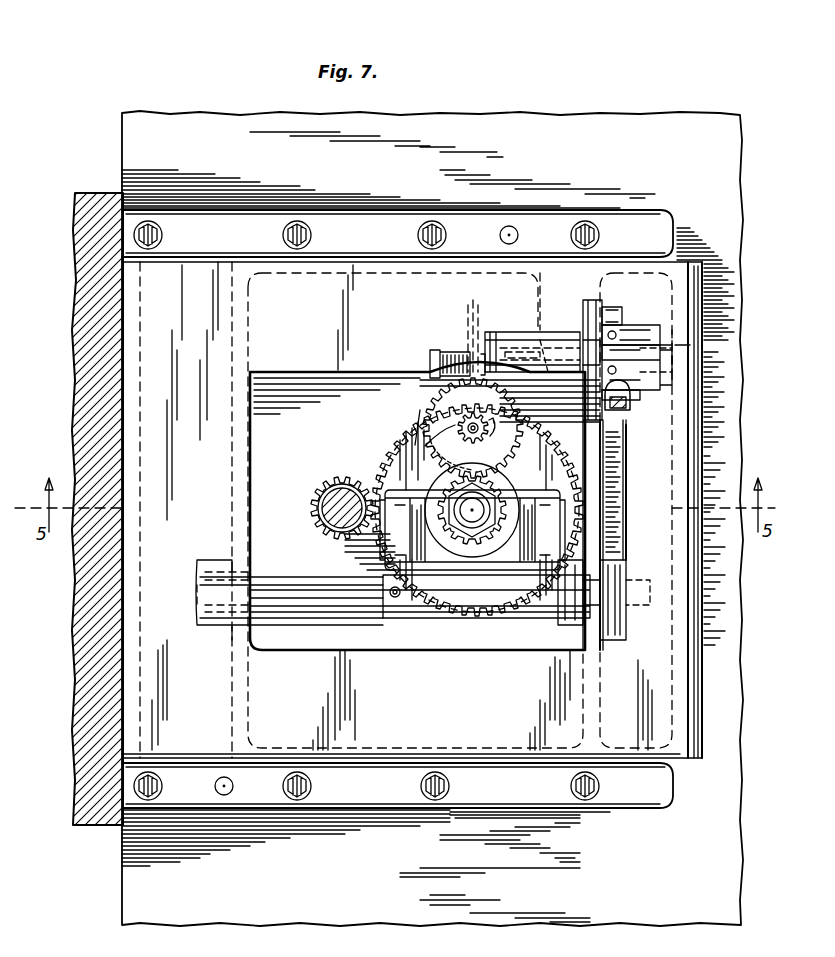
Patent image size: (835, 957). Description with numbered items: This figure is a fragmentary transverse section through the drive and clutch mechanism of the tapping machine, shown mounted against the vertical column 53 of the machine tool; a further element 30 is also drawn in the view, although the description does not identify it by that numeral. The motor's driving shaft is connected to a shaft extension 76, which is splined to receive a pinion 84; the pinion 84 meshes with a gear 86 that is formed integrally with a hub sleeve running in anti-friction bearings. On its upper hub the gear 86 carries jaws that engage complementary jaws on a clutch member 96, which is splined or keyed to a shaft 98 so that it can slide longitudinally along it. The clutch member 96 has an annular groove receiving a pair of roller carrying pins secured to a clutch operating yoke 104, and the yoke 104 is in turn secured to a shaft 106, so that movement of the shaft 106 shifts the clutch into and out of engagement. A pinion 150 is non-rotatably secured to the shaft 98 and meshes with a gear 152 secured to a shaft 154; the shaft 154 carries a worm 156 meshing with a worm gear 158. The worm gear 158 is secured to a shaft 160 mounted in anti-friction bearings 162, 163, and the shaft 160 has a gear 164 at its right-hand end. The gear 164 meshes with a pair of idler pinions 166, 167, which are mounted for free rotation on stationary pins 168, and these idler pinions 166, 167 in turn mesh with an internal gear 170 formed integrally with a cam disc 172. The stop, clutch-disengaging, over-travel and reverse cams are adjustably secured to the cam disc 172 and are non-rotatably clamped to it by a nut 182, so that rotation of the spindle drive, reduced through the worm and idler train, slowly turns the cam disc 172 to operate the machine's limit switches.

The vertical column 53 is at (78, 788).
The shaft 106 is at (320, 597).
The pinion 150 is at (450, 532).
The clutch member 96 is at (440, 565).
The clutch operating yoke 104 is at (540, 531).
The gear 86 is at (400, 470).
The worm 156 is at (445, 420).
The gear 152 is at (458, 433).
The shaft 154 is at (415, 445).
The shaft 98 is at (482, 548).
The small gear 30 is at (320, 505).
The shaft extension 76 is at (318, 520).
The pinion 84 is at (320, 530).
The shaft 160 is at (448, 356).
The anti-friction bearing 162 is at (490, 350).
The anti-friction bearing 163 is at (580, 348).
The worm gear 158 is at (470, 332).
The stationary pins 168 is at (548, 372).
The internal gear 170 is at (598, 330).
The cam disc 172 is at (612, 308).
The idler pinion 166 is at (625, 330).
The gear 164 is at (626, 348).
The idler pinion 167 is at (630, 395).
The nut 182 is at (690, 334).